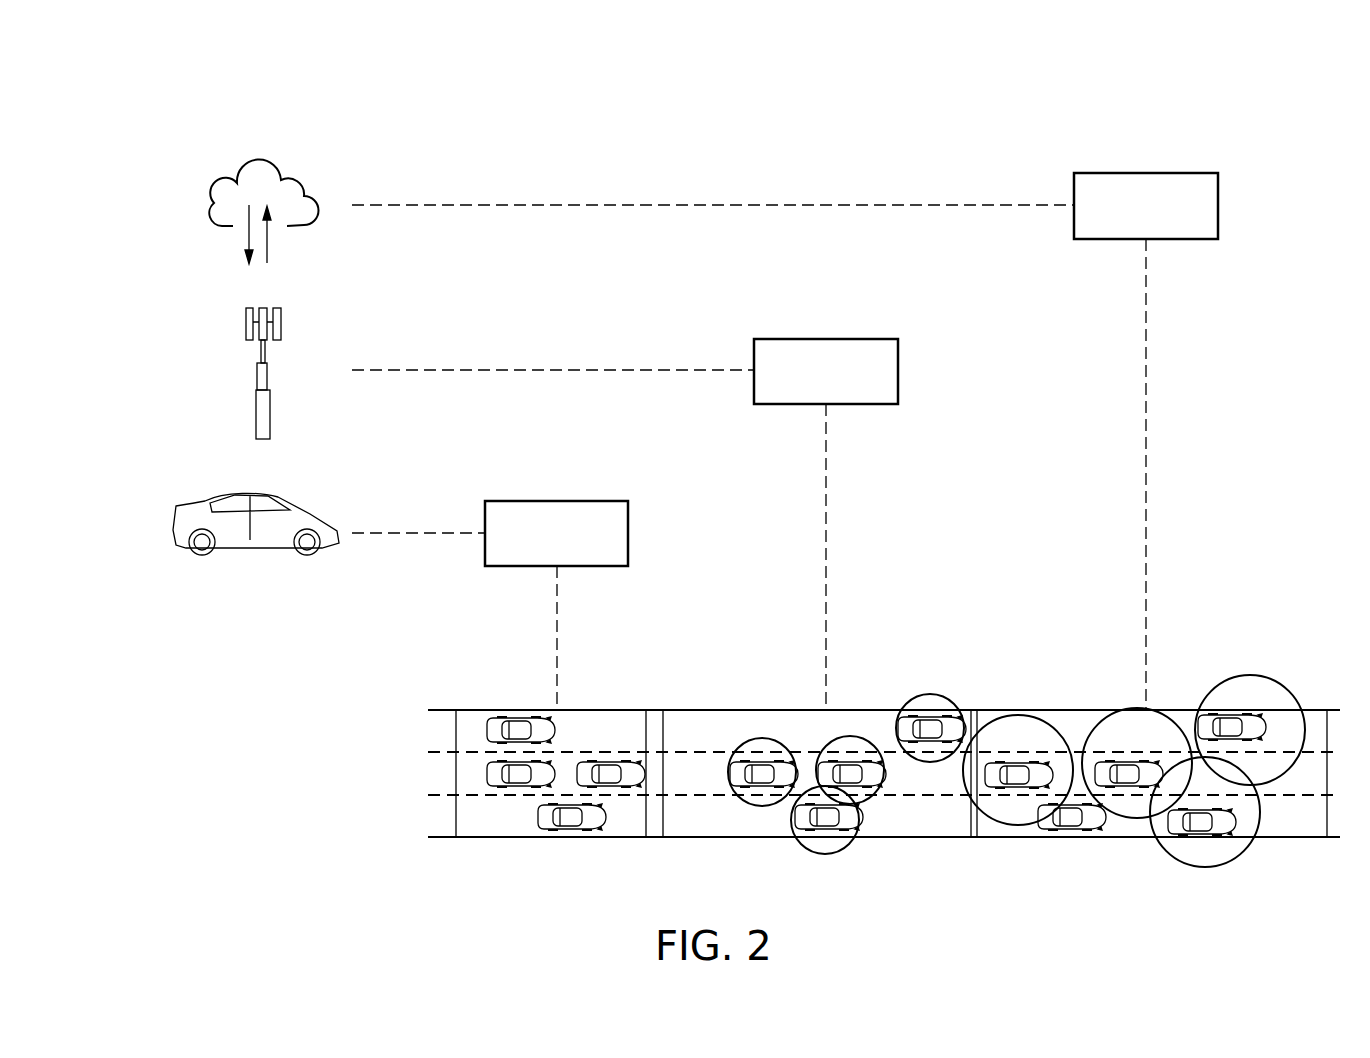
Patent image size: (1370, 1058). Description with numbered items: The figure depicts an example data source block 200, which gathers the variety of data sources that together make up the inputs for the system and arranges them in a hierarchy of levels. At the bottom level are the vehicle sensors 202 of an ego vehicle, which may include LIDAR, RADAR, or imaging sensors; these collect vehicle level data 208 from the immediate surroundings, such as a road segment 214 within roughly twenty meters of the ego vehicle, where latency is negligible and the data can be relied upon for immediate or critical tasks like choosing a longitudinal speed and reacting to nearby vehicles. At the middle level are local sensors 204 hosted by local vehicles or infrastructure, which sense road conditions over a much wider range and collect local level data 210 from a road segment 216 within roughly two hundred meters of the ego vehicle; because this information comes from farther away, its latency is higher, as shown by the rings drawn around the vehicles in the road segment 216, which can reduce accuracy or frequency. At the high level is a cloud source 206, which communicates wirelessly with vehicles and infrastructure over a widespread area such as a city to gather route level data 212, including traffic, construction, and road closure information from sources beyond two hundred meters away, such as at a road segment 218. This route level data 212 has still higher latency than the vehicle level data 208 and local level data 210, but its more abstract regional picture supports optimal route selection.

The data source block 200 is at (354, 130).
The vehicle sensors 202 is at (173, 520).
The local sensors 204 is at (246, 322).
The cloud source 206 is at (207, 203).
The vehicle level data 208 is at (628, 533).
The local level data 210 is at (898, 370).
The route level data 212 is at (1218, 205).
The road segment 214 is at (501, 838).
The road segment 216 is at (740, 838).
The road segment 218 is at (1068, 838).